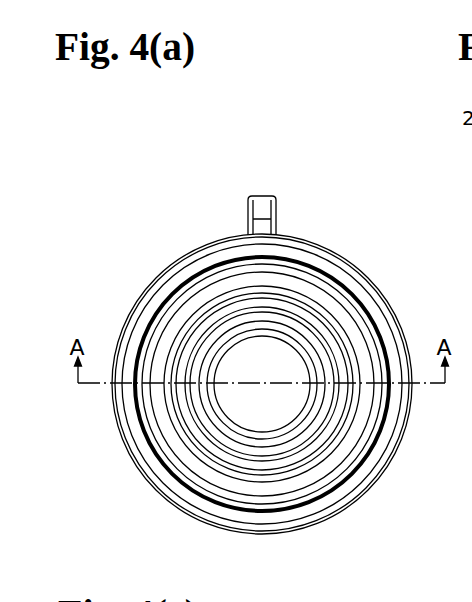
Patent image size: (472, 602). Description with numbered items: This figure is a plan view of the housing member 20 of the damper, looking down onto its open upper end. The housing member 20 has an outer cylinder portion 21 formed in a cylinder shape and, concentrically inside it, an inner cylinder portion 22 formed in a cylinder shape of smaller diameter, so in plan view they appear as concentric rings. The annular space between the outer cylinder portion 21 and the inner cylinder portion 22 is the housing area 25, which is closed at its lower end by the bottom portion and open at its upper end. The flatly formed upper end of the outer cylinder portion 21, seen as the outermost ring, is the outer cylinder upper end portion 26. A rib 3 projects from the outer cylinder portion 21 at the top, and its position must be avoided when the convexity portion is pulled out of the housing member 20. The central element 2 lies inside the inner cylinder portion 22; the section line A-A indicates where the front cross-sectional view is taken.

The housing member 20 is at (90, 232).
The outer cylinder portion 21 is at (129, 317).
The outer cylinder upper end portion 26 is at (179, 260).
The housing area 25 is at (363, 427).
The inner cylinder portion 22 is at (303, 453).
The central opening 2 is at (278, 360).
The rib 3 is at (262, 202).